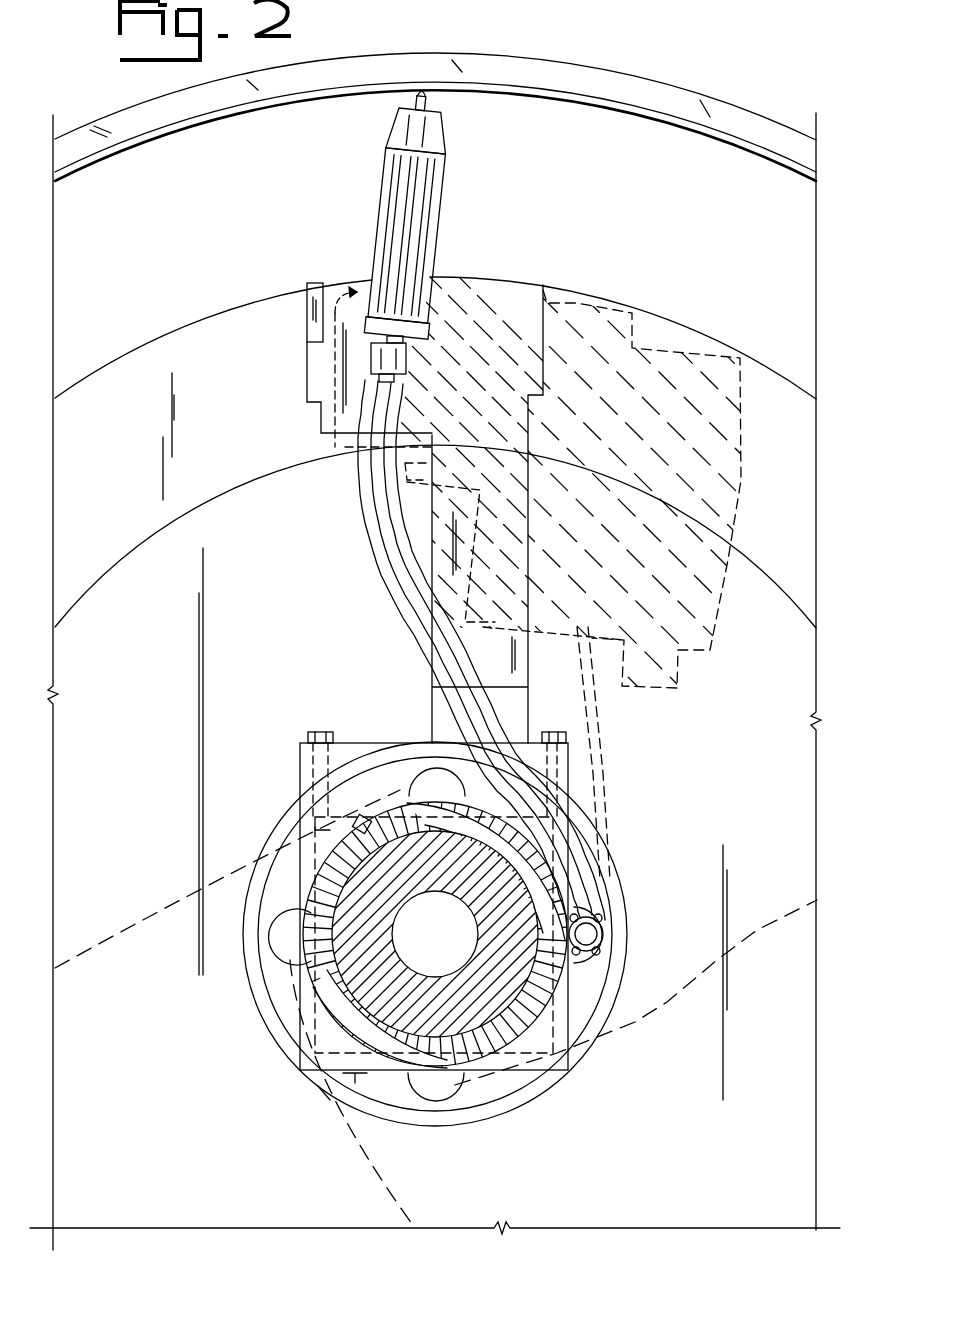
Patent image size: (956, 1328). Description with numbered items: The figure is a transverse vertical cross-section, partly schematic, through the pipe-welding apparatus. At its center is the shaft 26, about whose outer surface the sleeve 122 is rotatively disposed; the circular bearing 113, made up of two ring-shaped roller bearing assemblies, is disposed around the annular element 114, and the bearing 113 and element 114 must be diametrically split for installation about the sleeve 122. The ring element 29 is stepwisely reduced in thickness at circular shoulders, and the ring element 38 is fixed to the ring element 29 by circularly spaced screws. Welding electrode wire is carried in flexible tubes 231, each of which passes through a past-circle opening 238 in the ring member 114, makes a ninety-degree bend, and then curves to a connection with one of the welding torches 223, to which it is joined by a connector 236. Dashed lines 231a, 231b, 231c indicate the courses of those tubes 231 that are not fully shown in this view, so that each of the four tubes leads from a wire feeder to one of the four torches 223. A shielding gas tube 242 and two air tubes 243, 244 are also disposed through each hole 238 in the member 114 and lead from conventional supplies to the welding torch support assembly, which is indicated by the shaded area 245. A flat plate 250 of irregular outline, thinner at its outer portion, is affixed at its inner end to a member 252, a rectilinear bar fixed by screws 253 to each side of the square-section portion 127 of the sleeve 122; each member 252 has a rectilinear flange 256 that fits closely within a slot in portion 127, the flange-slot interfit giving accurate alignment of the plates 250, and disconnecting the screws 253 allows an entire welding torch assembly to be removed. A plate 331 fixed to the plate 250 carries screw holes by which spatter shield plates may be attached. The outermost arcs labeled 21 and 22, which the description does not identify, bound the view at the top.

The inner wall surface 21 is at (568, 58).
The pipe wall 22 is at (648, 96).
The welding torch 223 is at (438, 213).
The plate 331 is at (307, 319).
The connector 236 is at (371, 357).
The ring element 38 is at (216, 447).
The ring element 29 is at (268, 651).
The welding torch support assembly 245 is at (730, 483).
The flat plate 250 is at (432, 527).
The shielding gas tube 242 is at (366, 567).
The flexible tube 231 is at (386, 588).
The air tube 243 is at (600, 773).
The air tube 244 is at (596, 797).
The member 252 is at (390, 723).
The screws 253 is at (318, 732).
The rectilinear flange 256 is at (392, 793).
The past circle opening 238 is at (452, 778).
The sleeve 122 is at (315, 934).
The circular bearing 113 is at (267, 1027).
The annular element 114 is at (293, 1037).
The portion of square cross section 127 is at (323, 1093).
The shaft 26 is at (495, 1055).
The dashed line 231a is at (150, 904).
The dashed line 231b is at (370, 1172).
The dashed line 231c is at (648, 1020).